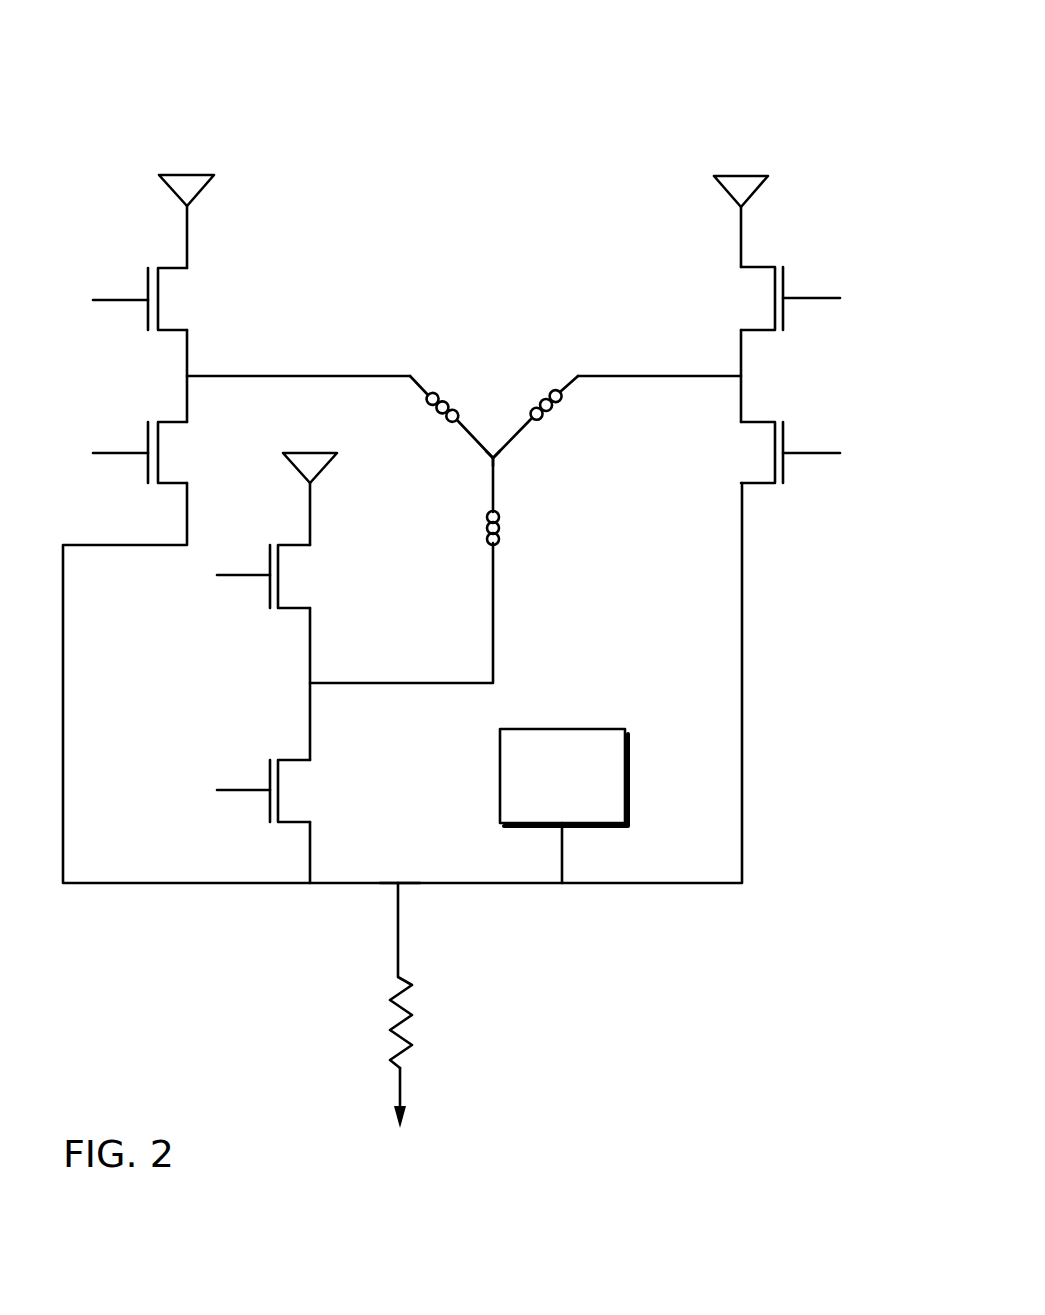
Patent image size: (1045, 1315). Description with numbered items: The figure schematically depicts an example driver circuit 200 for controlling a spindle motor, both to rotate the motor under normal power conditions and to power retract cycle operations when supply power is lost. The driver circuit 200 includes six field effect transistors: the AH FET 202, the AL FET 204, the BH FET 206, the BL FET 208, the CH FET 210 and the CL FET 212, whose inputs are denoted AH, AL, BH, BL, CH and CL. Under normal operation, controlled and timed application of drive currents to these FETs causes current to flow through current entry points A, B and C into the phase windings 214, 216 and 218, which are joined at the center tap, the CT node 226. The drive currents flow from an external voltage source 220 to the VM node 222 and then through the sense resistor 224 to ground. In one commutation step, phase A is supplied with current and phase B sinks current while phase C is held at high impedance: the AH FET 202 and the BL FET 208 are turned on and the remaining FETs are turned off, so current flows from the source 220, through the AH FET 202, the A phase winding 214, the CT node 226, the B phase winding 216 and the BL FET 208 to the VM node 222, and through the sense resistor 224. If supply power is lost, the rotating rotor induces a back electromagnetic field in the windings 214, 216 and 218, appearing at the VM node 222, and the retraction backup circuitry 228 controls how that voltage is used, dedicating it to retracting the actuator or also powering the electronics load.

The driver circuit 200 is at (751, 72).
The AH FET 202 is at (148, 272).
The AL FET 204 is at (148, 426).
The BH FET 206 is at (786, 276).
The BL FET 208 is at (786, 430).
The CH FET 210 is at (270, 554).
The CL FET 212 is at (270, 767).
The phase winding 214 is at (428, 401).
The phase winding 216 is at (556, 401).
The phase winding 218 is at (498, 545).
The external voltage source 220 is at (200, 177).
The VM node 222 is at (408, 856).
The sense resistor 224 is at (406, 1050).
The CT node 226 is at (490, 463).
The retraction backup circuitry 228 is at (562, 729).